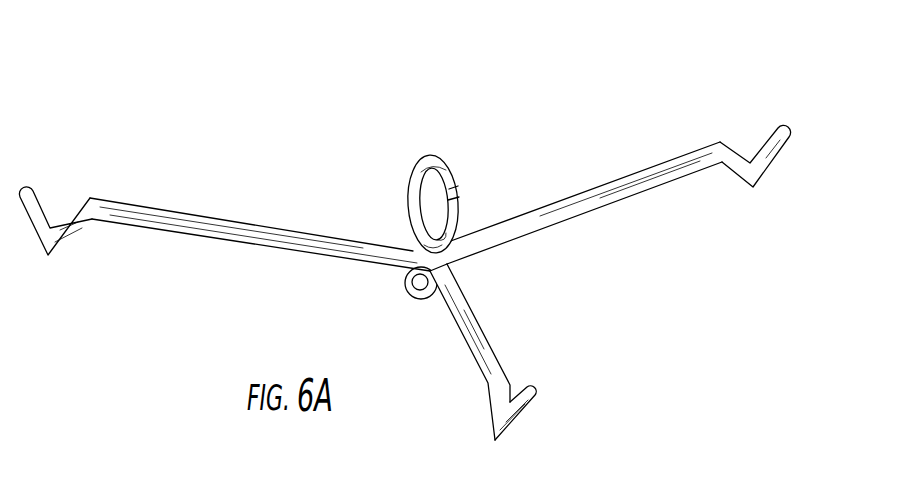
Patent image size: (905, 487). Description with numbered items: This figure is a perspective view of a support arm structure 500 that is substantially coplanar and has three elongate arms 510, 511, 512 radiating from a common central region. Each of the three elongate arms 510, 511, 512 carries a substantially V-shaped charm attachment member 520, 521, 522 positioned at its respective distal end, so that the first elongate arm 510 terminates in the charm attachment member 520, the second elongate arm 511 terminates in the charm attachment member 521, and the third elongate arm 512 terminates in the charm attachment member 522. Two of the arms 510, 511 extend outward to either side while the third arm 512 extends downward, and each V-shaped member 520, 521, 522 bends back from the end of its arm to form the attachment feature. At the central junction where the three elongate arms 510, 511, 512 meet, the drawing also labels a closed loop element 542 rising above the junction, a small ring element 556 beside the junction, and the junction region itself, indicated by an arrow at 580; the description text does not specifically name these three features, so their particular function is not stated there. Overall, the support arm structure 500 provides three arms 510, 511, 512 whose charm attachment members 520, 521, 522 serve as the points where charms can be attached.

The support arm structure 500 is at (594, 74).
The elongate arm 510 is at (280, 237).
The elongate arm 511 is at (548, 206).
The elongate arm 512 is at (481, 342).
The substantially V-shaped charm attachment member 520 is at (48, 213).
The substantially V-shaped charm attachment member 521 is at (783, 132).
The substantially V-shaped charm attachment member 522 is at (533, 388).
The loop 542 is at (428, 158).
The ring 556 is at (417, 300).
The junction 580 is at (451, 266).